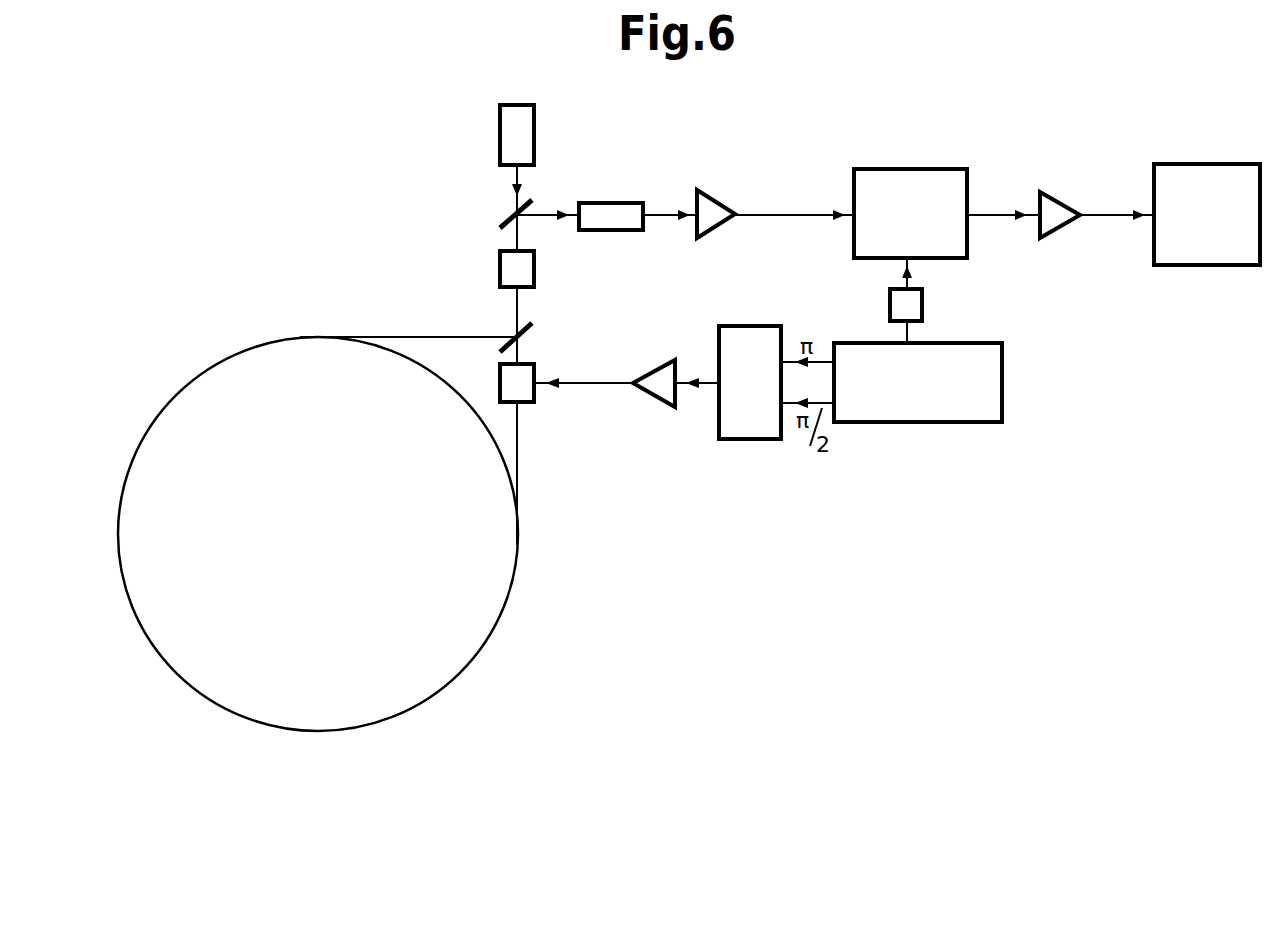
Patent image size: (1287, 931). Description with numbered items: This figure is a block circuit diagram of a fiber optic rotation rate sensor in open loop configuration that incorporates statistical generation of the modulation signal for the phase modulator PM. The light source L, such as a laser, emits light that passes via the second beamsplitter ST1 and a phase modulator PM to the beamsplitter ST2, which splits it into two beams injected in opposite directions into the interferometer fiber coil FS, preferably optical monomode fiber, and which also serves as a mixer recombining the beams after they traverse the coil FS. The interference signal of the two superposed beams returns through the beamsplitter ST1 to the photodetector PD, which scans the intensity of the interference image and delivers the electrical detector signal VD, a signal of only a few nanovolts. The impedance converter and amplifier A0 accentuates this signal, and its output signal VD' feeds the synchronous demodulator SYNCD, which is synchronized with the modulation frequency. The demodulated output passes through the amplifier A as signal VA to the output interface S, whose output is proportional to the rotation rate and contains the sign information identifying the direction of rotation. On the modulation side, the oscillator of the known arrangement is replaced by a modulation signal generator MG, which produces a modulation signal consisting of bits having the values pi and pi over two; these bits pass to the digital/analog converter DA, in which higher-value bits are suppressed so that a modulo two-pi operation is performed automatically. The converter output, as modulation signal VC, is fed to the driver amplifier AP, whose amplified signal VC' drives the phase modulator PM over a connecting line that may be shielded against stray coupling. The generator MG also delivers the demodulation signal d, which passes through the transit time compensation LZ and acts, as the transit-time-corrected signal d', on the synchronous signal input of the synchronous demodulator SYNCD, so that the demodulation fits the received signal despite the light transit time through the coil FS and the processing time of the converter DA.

The light source L is at (535, 133).
The second beamsplitter ST1 is at (508, 214).
The phase modulator PM is at (500, 266).
The beamsplitter ST2 is at (530, 333).
The interferometer fiber coil FS is at (482, 637).
The photodetector PD is at (598, 202).
The detector signal VD is at (669, 185).
The impedance converter and amplifier A0 is at (710, 228).
The amplified detector signal VD' is at (794, 191).
The synchronous demodulator SYNCD is at (910, 198).
The amplifier A is at (1062, 200).
The output signal VA is at (1110, 214).
The output interface S is at (1176, 163).
The transit-time-corrected demodulation signal d' is at (933, 275).
The transit time compensation LZ is at (889, 302).
The demodulation signal d is at (932, 326).
The modulation signal generator MG is at (1003, 362).
The digital/analog converter DA is at (740, 441).
The modulation signal VC is at (697, 347).
The driver amplifier AP is at (650, 368).
The amplified modulation signal VC' is at (583, 362).